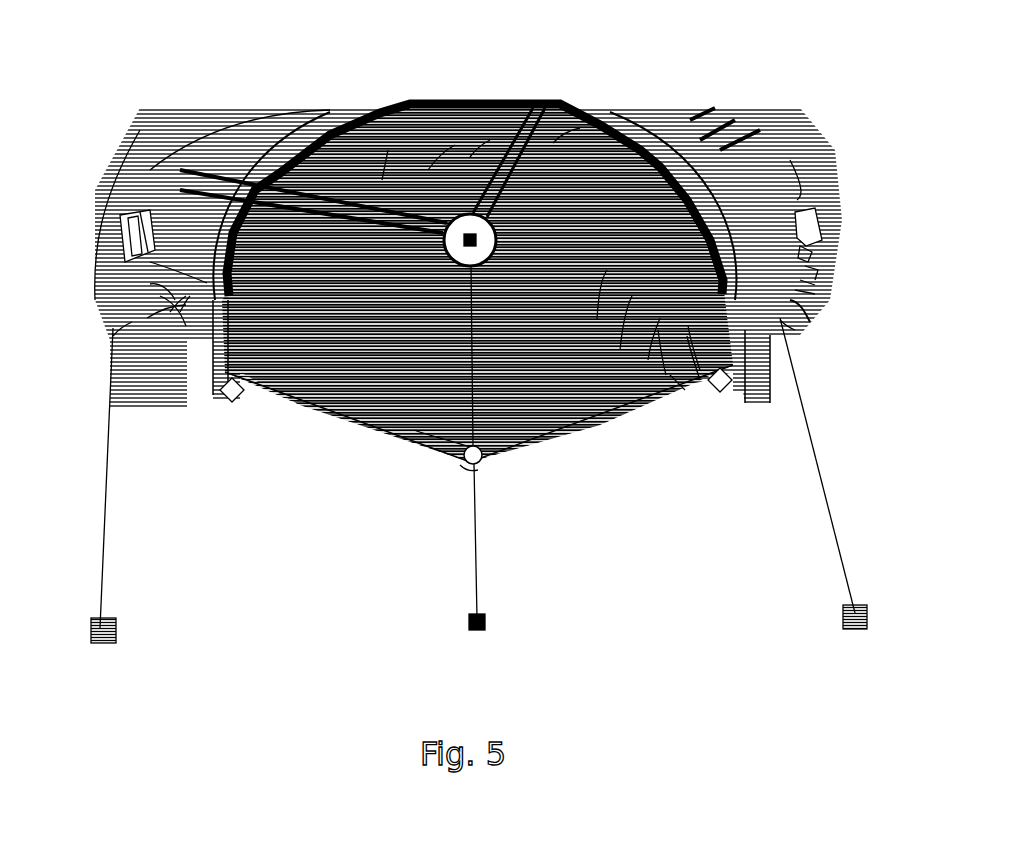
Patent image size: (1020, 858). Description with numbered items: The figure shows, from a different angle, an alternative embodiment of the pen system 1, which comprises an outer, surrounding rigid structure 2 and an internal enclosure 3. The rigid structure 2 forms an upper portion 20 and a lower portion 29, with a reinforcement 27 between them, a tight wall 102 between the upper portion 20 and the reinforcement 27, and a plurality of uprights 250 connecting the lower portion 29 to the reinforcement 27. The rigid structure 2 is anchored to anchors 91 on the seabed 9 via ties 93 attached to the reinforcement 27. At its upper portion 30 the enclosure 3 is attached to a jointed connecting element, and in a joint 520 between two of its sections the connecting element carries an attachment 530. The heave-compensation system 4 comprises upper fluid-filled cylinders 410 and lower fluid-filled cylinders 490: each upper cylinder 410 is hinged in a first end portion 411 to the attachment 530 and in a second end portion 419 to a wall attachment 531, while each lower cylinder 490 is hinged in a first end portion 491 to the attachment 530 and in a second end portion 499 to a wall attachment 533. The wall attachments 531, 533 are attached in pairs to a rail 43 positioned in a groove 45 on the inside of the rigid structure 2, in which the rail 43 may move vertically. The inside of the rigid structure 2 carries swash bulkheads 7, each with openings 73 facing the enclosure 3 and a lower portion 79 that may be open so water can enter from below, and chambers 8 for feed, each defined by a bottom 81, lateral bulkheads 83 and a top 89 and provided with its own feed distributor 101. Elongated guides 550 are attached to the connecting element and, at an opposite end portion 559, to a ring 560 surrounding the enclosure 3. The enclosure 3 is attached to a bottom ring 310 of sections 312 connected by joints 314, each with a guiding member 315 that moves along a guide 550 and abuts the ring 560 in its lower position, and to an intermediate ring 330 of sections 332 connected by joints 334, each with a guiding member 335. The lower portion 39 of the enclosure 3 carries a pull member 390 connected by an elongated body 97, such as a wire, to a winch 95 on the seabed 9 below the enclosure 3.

The pen system 1 is at (146, 88).
The rigid structure 2 is at (140, 125).
The upper portion 20 is at (133, 148).
The joint 520 is at (207, 278).
The attachment 530 is at (210, 278).
The feed distributor 101 is at (148, 222).
The first end portion 411 is at (207, 283).
The heave-compensation system 4 is at (100, 277).
The second end portion 419 is at (150, 284).
The upper fluid-filled cylinder 410 is at (160, 296).
The swash bulkhead 7 is at (147, 318).
The second end portion 499 is at (113, 336).
The lower fluid-filled cylinder 490 is at (170, 312).
The first end portion 491 is at (180, 312).
The lower portion 29 is at (174, 310).
The lower portion 79 is at (186, 326).
The enclosure 3 is at (372, 408).
The lower portion 39 is at (414, 430).
The pull member 390 is at (460, 465).
The elongated body 97 is at (478, 576).
The winch 95 is at (470, 620).
The upper portion 30 is at (710, 207).
The tie 93 is at (112, 528).
The anchor 91 is at (106, 628).
The seabed 9 is at (204, 573).
The guiding member 315 is at (607, 270).
The joint 314 is at (632, 296).
The section 312 is at (660, 318).
The bottom ring 310 is at (666, 375).
The intermediate ring 330 is at (688, 325).
The end portion 559 is at (687, 336).
The ring 560 is at (670, 375).
The top 89 is at (797, 200).
The chamber 8 is at (813, 232).
The lateral bulkhead 83 is at (805, 257).
The wall attachment 531 is at (813, 273).
The rail 43 is at (813, 285).
The tight wall 102 is at (813, 293).
The reinforcement 27 is at (798, 303).
The wall attachment 533 is at (790, 323).
The groove 45 is at (790, 330).
The bottom 81 is at (783, 320).
The upright 250 is at (788, 323).
The opening 73 is at (248, 140).
The section 332 is at (382, 180).
The joint 334 is at (428, 170).
The guiding member 335 is at (470, 157).
The elongated guide 550 is at (553, 143).